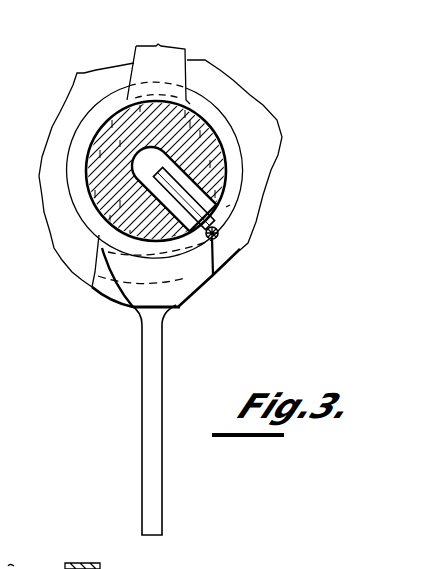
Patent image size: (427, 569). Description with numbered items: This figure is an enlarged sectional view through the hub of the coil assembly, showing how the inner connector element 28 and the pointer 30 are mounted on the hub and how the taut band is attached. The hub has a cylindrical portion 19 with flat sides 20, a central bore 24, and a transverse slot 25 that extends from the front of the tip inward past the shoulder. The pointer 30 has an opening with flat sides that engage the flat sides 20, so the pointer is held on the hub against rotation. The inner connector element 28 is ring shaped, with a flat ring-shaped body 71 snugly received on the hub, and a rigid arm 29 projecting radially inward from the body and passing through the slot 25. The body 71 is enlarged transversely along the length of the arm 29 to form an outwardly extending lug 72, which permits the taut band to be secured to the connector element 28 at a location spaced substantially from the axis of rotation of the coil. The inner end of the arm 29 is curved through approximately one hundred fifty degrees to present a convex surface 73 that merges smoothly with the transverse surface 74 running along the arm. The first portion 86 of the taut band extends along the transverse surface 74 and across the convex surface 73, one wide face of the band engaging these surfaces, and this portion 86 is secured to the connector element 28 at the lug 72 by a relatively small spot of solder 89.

The cylindrical portion 19 is at (229, 113).
The flat sides 20 is at (64, 167).
The central bore 24 is at (165, 151).
The transverse slot 25 is at (188, 257).
The inner connector element 28 is at (220, 232).
The arm 29 is at (229, 173).
The pointer 30 is at (186, 57).
The ring-shaped body 71 is at (217, 131).
The lug 72 is at (222, 241).
The convex surface 73 is at (137, 176).
The transverse surface 74 is at (176, 236).
The first portion of band element 86 is at (228, 207).
The spot of solder 89 is at (214, 276).